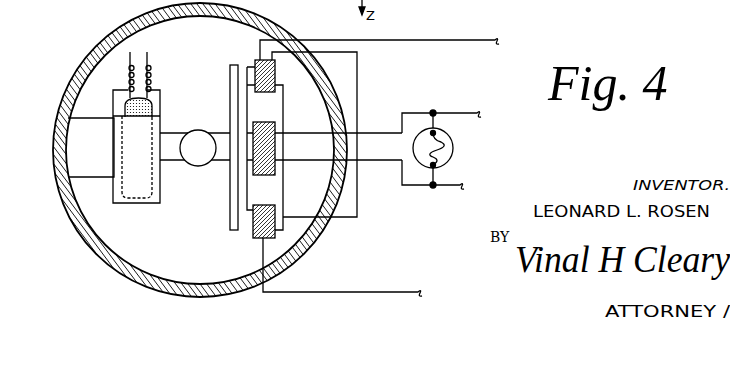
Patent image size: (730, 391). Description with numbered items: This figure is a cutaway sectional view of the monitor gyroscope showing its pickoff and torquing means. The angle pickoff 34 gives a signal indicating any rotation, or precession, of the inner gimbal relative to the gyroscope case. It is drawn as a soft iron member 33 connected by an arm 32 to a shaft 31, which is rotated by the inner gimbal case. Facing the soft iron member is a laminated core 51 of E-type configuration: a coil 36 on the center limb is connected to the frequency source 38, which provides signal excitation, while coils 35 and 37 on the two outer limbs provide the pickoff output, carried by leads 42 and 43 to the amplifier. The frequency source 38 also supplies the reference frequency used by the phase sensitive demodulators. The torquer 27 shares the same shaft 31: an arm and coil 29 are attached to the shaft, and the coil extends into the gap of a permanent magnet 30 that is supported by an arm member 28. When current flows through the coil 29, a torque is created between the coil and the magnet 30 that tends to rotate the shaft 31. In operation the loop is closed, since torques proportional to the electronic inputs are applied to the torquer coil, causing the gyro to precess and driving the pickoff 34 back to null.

The gyro torquer 27 is at (85, 177).
The arm member 28 is at (130, 79).
The coil 29 is at (168, 160).
The permanent magnet 30 is at (150, 204).
The shaft 31 is at (197, 130).
The arm 32 is at (221, 159).
The soft iron member 33 is at (236, 94).
The angle pickoff 34 is at (246, 238).
The coil 35 is at (270, 205).
The coil 36 is at (272, 122).
The coil 37 is at (257, 62).
The frequency source 38 is at (455, 148).
The lead 42 is at (420, 292).
The lead 43 is at (462, 42).
The laminated core 51 is at (283, 82).